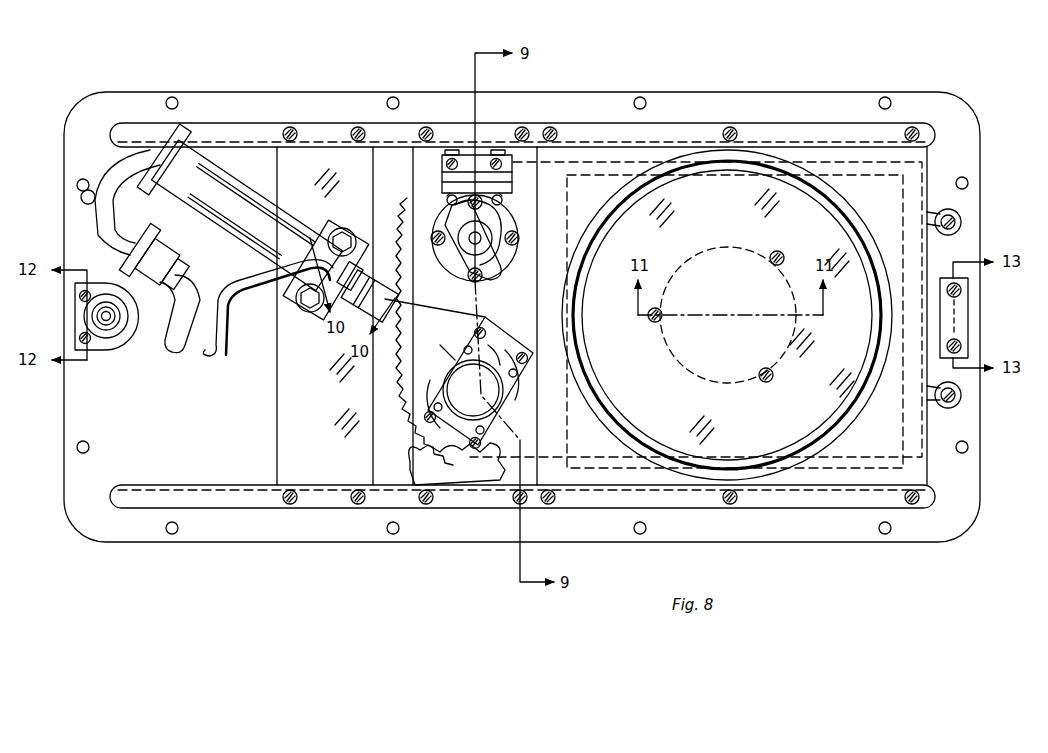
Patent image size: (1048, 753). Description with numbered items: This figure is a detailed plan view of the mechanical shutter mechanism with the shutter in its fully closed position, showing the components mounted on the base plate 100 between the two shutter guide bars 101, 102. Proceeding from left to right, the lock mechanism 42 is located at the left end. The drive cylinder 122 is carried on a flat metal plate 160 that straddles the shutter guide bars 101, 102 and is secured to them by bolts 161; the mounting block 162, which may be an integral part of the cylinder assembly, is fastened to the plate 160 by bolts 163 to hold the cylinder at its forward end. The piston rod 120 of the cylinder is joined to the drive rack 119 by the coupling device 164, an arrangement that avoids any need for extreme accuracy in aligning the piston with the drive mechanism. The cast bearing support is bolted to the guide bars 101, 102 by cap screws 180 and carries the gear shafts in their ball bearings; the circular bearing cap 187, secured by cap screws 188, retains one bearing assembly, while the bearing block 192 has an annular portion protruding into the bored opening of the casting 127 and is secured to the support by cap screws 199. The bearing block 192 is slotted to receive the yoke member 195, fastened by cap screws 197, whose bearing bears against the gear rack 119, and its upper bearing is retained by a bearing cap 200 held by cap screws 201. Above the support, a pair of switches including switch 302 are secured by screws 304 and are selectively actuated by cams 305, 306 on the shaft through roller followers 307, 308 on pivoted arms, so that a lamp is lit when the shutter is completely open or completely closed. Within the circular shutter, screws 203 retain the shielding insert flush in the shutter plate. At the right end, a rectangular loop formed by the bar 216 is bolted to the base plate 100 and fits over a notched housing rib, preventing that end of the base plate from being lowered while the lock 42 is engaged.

The base plate 100 is at (78, 434).
The shutter guide bar 101 is at (254, 126).
The shutter guide bar 102 is at (205, 500).
The bolts 161 is at (293, 130).
The casting 127 is at (537, 300).
The screws 203 is at (665, 313).
The lock mechanism 42 is at (76, 320).
The flat metal plate 160 is at (281, 194).
The drive cylinder 122 is at (220, 172).
The mounting block 162 is at (347, 232).
The bolts 163 is at (332, 228).
The coupling device 164 is at (370, 312).
The piston rod 120 is at (375, 280).
The screws 304 is at (497, 160).
The switch 302 is at (516, 182).
The roller follower 307 is at (503, 201).
The circular bearing cap 187 is at (518, 248).
The cap screws 188 is at (505, 205).
The cam 305 is at (458, 226).
The roller follower 308 is at (450, 203).
The cam 306 is at (510, 266).
The bearing cap 200 is at (455, 424).
The cap screws 180 is at (520, 497).
The bearing block 192 is at (532, 356).
The drive rack 119 is at (413, 333).
The yoke member 195 is at (534, 328).
The cap screws 197 is at (528, 334).
The cap screws 201 is at (505, 433).
The cap screws 199 is at (490, 450).
The bar 216 is at (963, 314).